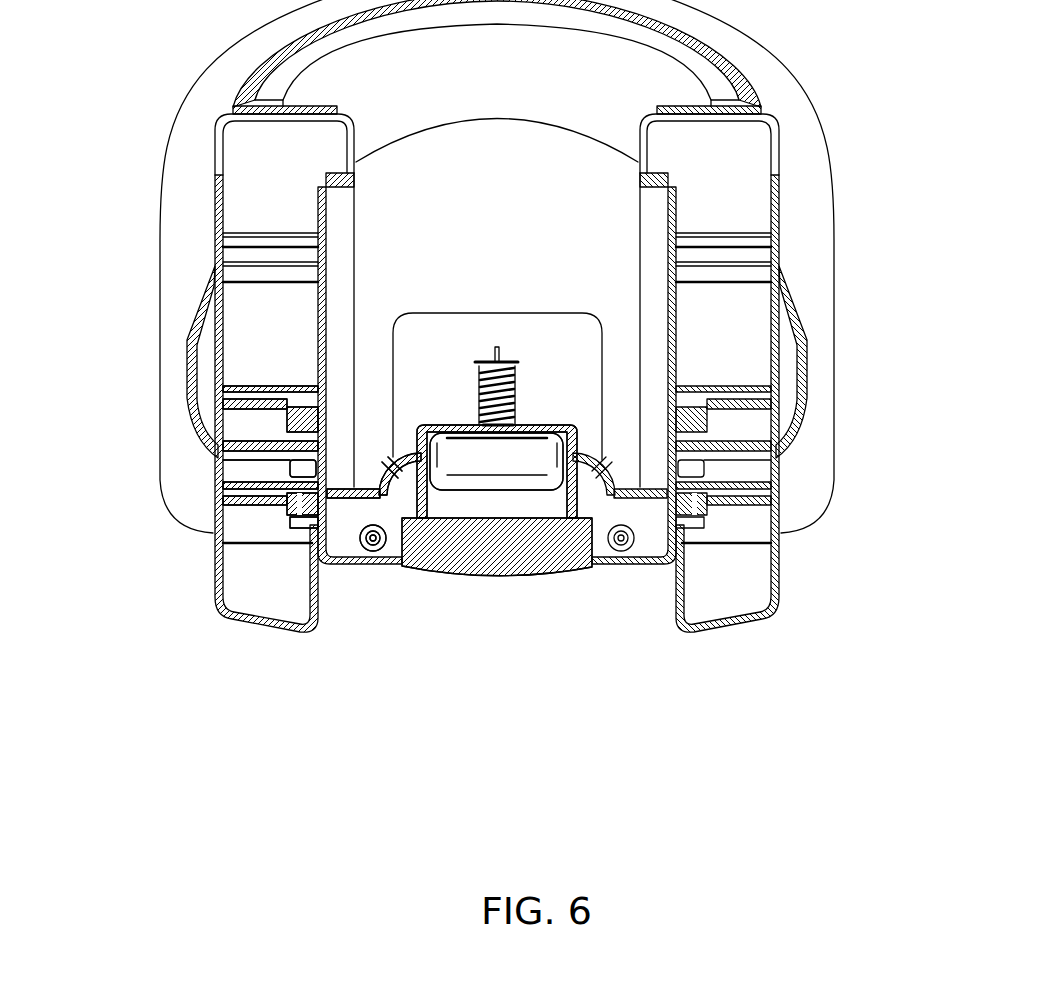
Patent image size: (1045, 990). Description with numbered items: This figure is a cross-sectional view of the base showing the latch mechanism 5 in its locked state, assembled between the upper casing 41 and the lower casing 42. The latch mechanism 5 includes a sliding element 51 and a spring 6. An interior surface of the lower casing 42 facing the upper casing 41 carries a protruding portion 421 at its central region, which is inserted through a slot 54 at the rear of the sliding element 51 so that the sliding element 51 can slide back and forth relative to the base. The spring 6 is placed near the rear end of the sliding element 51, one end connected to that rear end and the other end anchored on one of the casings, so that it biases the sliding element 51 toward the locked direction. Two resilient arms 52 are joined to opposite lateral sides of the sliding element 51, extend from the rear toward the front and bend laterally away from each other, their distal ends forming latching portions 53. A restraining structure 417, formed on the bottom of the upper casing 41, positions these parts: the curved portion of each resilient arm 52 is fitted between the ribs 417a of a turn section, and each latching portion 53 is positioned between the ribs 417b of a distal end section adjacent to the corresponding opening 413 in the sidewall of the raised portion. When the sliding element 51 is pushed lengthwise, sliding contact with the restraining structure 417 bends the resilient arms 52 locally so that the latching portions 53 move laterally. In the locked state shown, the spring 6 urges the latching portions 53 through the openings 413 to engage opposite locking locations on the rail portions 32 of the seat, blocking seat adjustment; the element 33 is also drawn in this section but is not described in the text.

The latch mechanism 5 is at (657, 670).
The spring 6 is at (532, 385).
The rail portion 32 is at (748, 623).
The engaging plate 33 is at (707, 463).
The upper casing 41 is at (797, 522).
The lower casing 42 is at (421, 367).
The sliding element 51 is at (503, 553).
The resilient arm 52 is at (600, 573).
The latching portion 53 is at (655, 560).
The slot 54 is at (533, 512).
The opening 413 is at (606, 450).
The restraining structure 417 is at (382, 715).
The rib 417a is at (385, 466).
The rib 417b is at (316, 461).
The protruding portion 421 is at (463, 465).